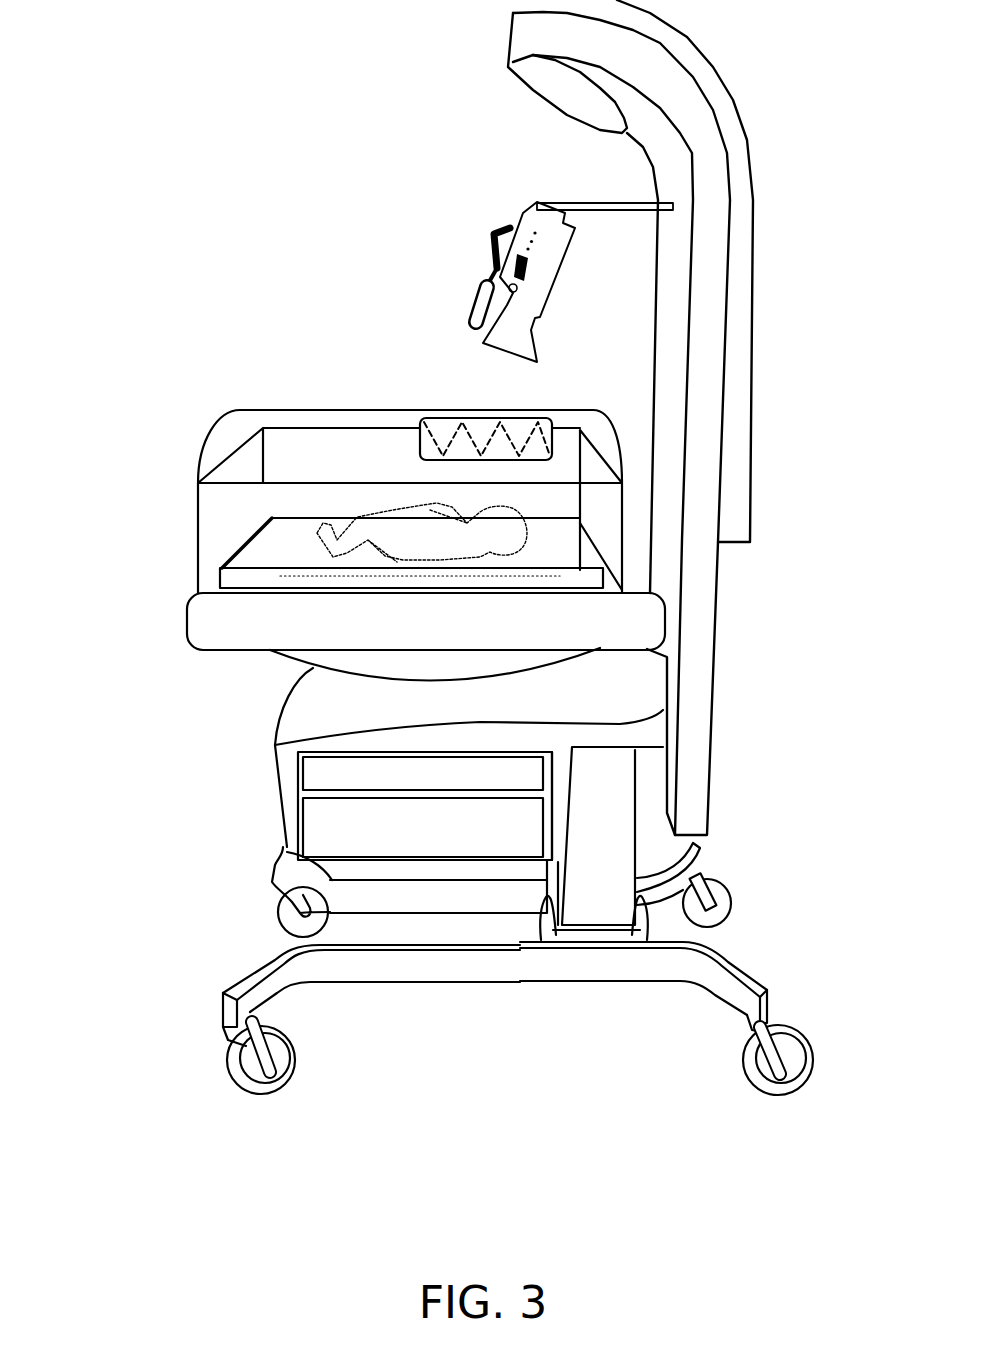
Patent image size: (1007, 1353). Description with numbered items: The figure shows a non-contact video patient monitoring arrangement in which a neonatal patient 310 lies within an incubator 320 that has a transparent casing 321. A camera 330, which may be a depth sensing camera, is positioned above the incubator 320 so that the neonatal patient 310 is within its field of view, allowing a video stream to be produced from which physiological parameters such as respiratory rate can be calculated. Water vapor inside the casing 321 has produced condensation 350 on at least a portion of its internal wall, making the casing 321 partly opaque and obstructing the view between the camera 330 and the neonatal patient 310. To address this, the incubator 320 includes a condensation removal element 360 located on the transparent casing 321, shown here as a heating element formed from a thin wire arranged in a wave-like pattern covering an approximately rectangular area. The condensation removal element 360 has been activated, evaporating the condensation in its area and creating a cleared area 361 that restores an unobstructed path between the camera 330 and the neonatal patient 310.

The neonatal patient 310 is at (563, 525).
The incubator 320 is at (163, 667).
The transparent casing 321 is at (197, 510).
The camera 330 is at (476, 241).
The condensation 350 is at (308, 436).
The condensation removal element 360 is at (408, 418).
The cleared area 361 is at (456, 405).